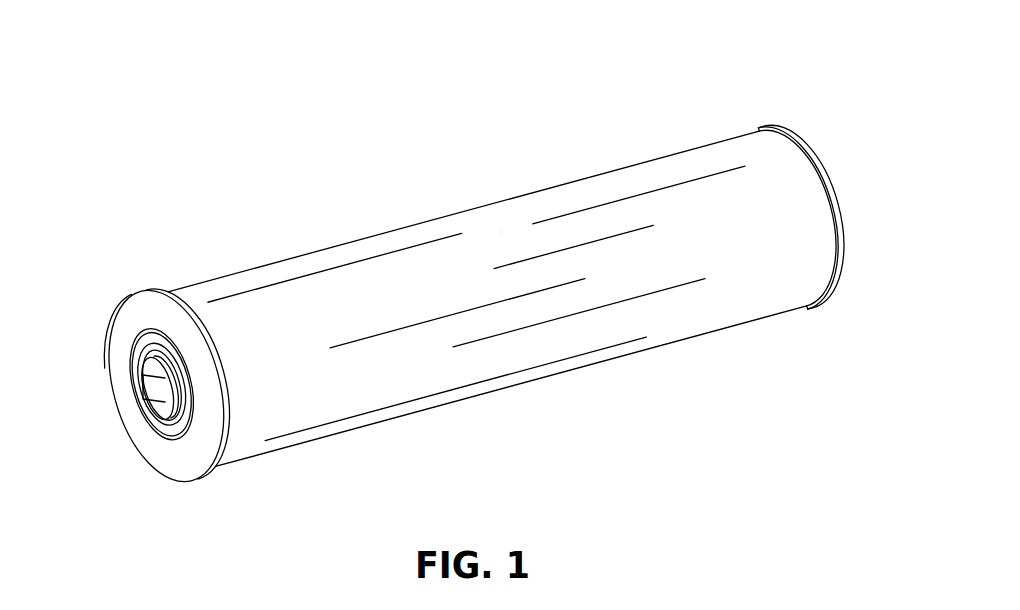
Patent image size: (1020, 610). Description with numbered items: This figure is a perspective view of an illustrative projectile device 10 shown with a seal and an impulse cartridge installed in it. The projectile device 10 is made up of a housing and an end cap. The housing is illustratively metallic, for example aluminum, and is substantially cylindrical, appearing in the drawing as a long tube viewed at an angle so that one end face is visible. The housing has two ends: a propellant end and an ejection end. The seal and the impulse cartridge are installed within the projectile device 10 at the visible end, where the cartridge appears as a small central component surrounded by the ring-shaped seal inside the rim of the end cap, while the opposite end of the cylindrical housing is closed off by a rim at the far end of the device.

The projectile device 10 is at (227, 181).